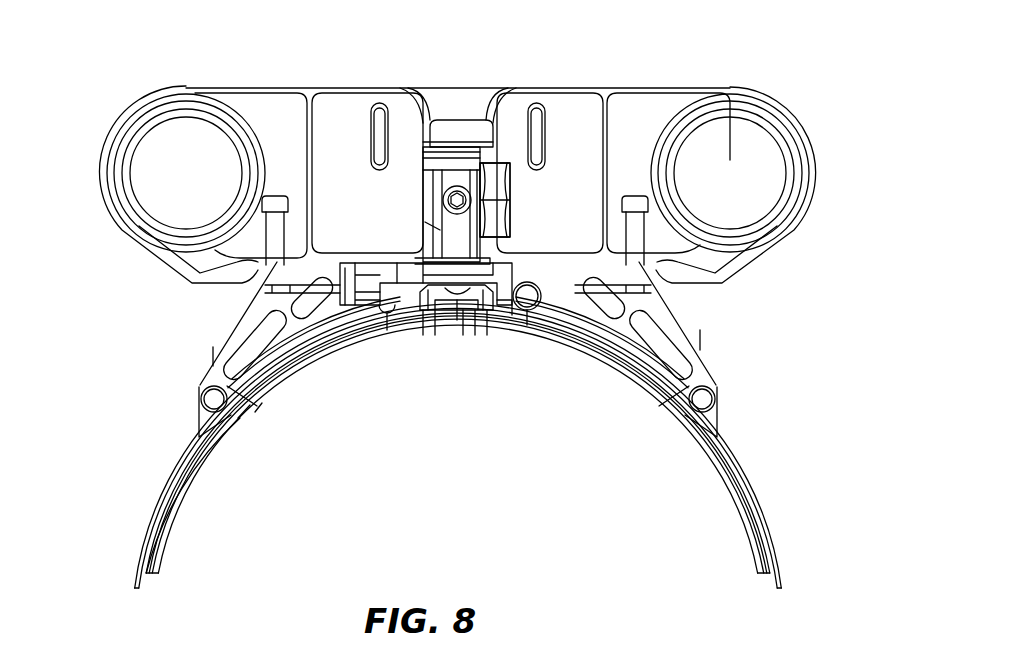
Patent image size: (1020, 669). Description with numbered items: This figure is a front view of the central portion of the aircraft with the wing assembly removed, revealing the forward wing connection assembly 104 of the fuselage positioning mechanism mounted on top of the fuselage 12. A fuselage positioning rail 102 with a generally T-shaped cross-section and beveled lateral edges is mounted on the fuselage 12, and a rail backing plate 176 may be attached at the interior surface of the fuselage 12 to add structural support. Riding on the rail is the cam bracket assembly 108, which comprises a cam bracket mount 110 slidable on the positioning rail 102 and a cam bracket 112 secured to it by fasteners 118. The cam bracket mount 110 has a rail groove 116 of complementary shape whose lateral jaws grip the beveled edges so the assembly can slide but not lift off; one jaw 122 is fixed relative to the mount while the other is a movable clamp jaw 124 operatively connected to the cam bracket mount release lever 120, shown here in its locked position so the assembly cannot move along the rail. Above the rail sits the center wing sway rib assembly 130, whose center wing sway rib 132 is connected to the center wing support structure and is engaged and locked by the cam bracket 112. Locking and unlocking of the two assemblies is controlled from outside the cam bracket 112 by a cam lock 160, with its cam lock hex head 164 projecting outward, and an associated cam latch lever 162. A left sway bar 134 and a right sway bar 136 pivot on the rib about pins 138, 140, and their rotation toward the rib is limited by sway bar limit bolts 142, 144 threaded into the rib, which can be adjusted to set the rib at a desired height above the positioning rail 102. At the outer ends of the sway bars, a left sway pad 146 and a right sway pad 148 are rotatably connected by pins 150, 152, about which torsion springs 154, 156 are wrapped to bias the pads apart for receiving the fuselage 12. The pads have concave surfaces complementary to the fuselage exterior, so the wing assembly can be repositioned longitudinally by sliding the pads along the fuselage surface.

The fuselage 12 is at (187, 502).
The fuselage positioning rail 102 is at (433, 315).
The forward wing connection assembly 104 is at (518, 58).
The cam bracket assembly 108 is at (465, 100).
The cam bracket mount 110 is at (330, 283).
The cam bracket 112 is at (455, 230).
The rail groove 116 is at (488, 318).
The fasteners 118 is at (466, 318).
The cam bracket mount release lever 120 is at (368, 285).
The fixed jaw 122 is at (505, 320).
The movable clamp jaw 124 is at (423, 312).
The center wing sway rib assembly 130 is at (812, 112).
The center wing sway rib 132 is at (257, 120).
The left sway bar 134 is at (657, 315).
The right sway bar 136 is at (247, 327).
The pin 138 is at (527, 303).
The pin 140 is at (387, 315).
The sway bar limit bolt 142 is at (640, 230).
The sway bar limit bolt 144 is at (277, 232).
The left sway pad 146 is at (743, 482).
The right sway pad 148 is at (163, 492).
The pin 150 is at (704, 402).
The pin 152 is at (213, 401).
The torsion spring 154 is at (702, 346).
The torsion spring 156 is at (210, 358).
The cam lock 160 is at (495, 178).
The cam lock hex head 164 is at (495, 200).
The cam latch lever 162 is at (445, 125).
The rail backing plate 176 is at (258, 405).